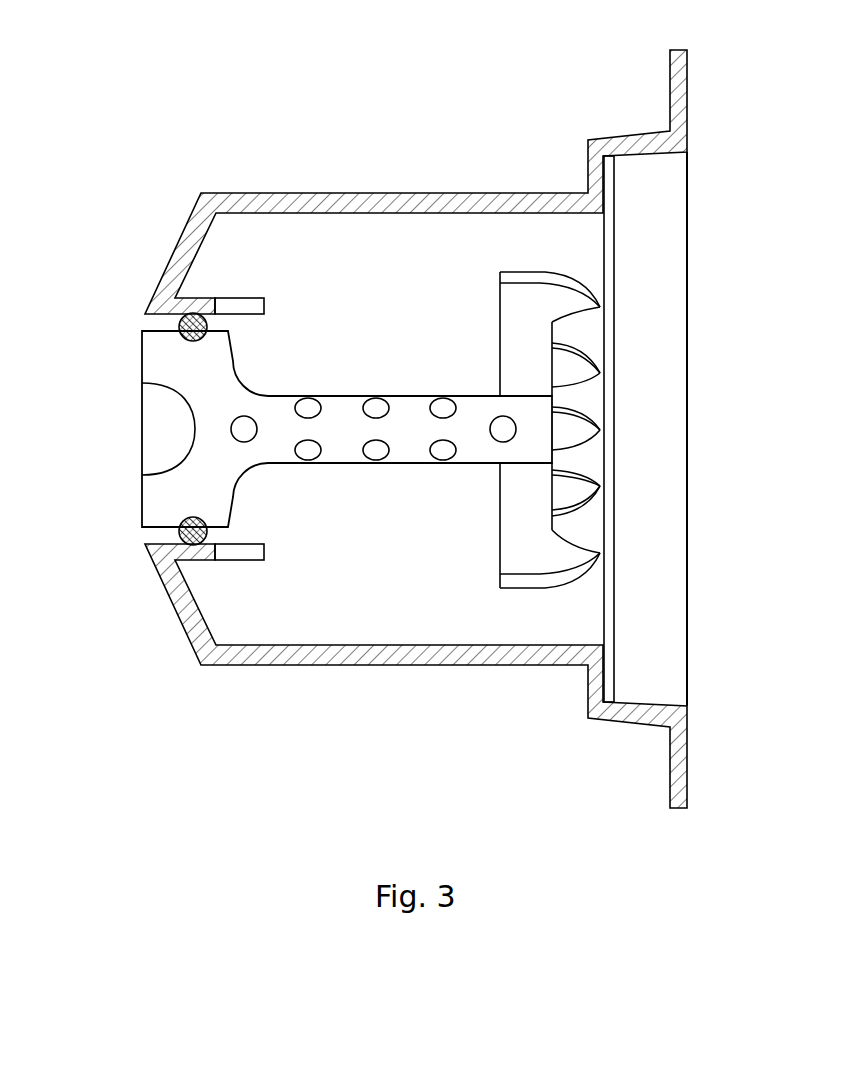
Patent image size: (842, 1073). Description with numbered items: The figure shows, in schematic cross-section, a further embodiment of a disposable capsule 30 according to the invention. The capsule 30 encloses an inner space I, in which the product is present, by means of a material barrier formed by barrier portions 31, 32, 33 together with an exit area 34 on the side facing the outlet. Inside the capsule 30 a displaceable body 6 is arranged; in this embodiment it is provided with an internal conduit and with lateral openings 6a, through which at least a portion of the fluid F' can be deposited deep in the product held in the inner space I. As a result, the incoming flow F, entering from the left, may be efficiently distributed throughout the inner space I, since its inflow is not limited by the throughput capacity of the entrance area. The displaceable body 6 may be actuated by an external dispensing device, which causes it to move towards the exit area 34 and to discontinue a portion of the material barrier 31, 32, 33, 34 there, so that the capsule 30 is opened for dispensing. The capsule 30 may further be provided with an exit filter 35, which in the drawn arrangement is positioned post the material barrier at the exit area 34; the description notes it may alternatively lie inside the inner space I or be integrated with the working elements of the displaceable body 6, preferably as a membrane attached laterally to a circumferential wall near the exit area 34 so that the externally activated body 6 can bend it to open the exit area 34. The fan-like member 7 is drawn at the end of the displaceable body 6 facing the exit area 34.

The disposable capsule 30 is at (387, 118).
The material barrier portion 31 is at (488, 194).
The material barrier portion 32 is at (310, 429).
The material barrier portion 33 is at (357, 665).
The exit area 34 is at (610, 352).
The exit filter 35 is at (687, 253).
The displaceable body 6 is at (391, 427).
The lateral openings 6a is at (382, 396).
The fan impeller 7 is at (577, 570).
The inner space I is at (283, 252).
The incoming flow F is at (81, 440).
The fluid portion F' is at (393, 411).